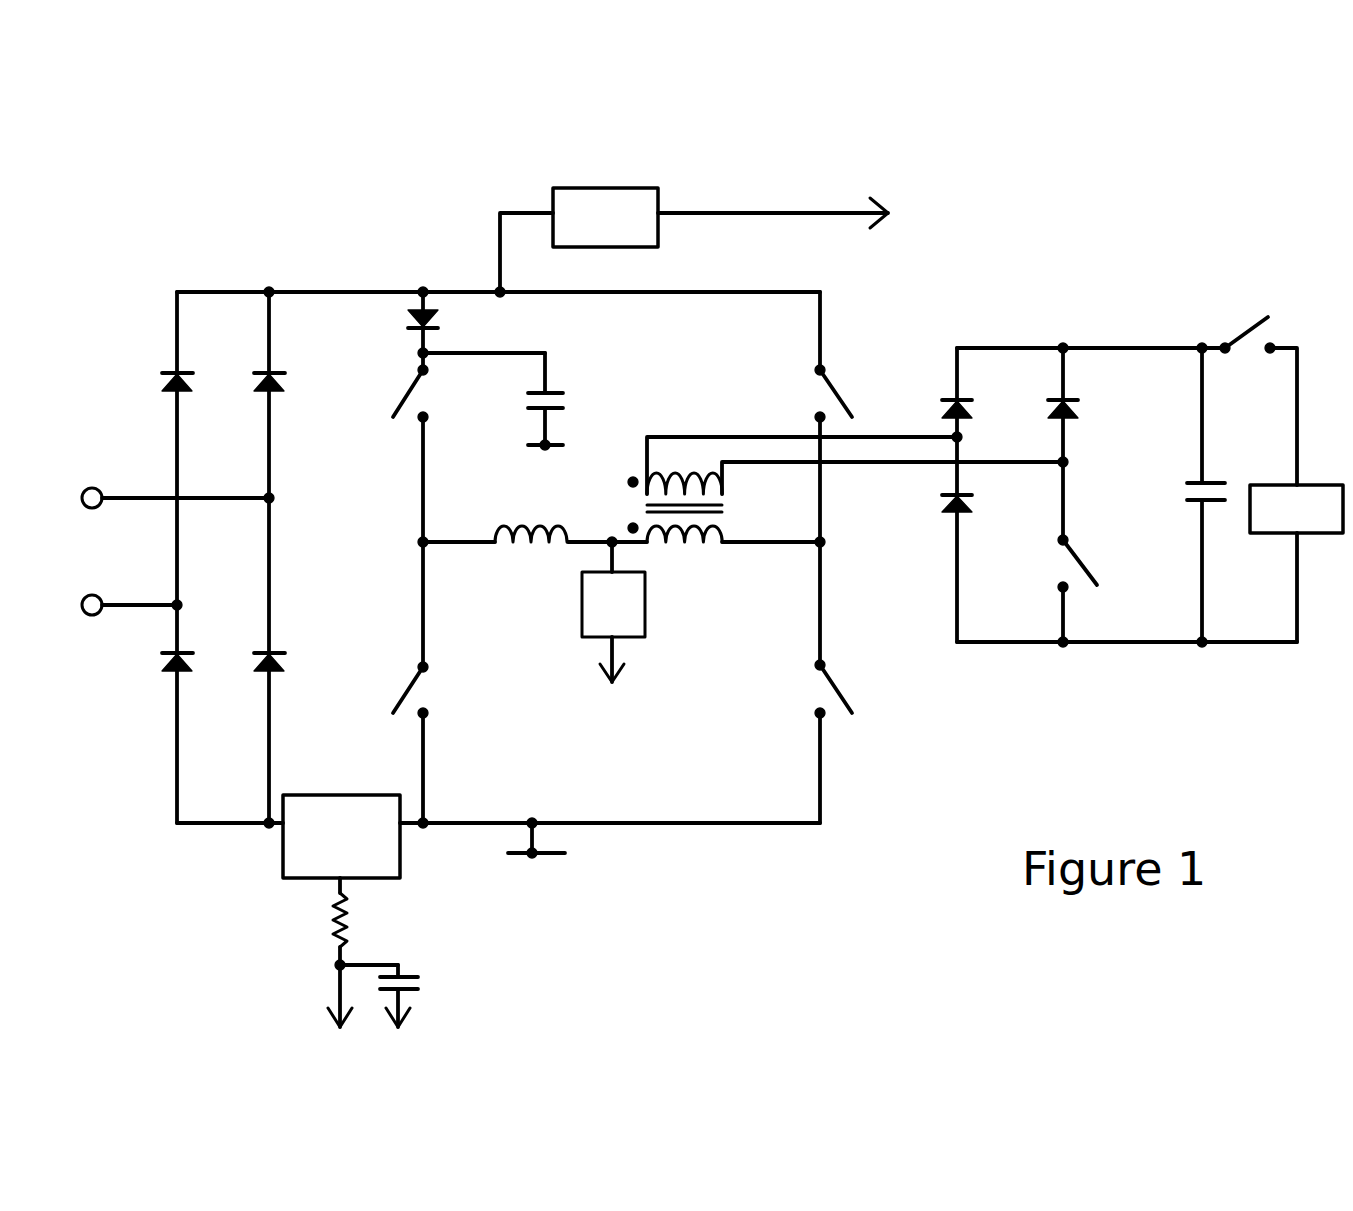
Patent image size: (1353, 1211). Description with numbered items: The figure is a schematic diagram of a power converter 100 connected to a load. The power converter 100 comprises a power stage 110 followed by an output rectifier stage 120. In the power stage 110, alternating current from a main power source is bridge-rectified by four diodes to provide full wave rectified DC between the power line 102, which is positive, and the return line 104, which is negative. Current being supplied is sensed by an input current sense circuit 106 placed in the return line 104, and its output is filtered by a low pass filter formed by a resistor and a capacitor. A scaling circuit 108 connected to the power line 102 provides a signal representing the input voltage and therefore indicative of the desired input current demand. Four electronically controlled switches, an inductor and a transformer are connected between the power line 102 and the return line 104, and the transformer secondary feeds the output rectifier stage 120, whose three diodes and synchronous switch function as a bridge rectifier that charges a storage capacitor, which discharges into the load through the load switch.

The power converter 100 is at (1072, 756).
The power line 102 is at (313, 292).
The return line 104 is at (558, 822).
The input current sense circuit 106 is at (310, 795).
The scaling circuit 108 is at (587, 188).
The power stage 110 is at (376, 211).
The output rectifier stage 120 is at (1052, 256).